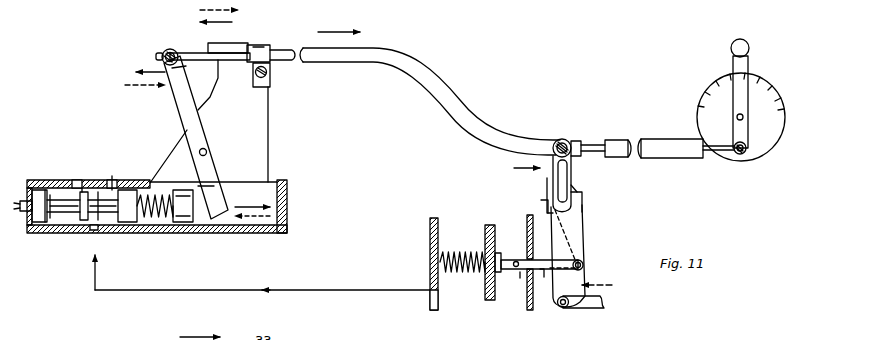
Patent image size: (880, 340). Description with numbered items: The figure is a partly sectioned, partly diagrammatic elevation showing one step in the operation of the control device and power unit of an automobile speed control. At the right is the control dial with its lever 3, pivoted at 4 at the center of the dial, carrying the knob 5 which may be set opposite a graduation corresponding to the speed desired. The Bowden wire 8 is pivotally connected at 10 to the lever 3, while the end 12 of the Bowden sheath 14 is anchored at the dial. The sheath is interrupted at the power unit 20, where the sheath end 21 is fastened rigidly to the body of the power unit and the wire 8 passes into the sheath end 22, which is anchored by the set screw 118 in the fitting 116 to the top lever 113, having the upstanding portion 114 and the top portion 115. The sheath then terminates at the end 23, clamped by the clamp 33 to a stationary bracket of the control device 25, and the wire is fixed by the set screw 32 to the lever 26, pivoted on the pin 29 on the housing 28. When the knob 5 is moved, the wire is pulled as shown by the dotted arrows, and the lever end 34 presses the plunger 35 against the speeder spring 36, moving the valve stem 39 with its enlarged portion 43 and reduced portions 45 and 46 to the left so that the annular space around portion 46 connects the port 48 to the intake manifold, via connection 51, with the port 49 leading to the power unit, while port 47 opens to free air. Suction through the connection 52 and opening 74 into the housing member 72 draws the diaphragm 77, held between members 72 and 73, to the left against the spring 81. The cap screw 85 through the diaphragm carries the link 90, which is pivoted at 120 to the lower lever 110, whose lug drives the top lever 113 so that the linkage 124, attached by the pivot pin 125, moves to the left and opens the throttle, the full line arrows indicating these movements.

The lever 3 is at (748, 80).
The pivot 4 is at (744, 116).
The knob 5 is at (730, 50).
The Bowden wire 8 is at (211, 85).
The pivotal connection 10 is at (742, 158).
The sheath end 12 is at (708, 156).
The Bowden sheath 14 is at (680, 158).
The power unit 20 is at (485, 275).
The sheath end 21 is at (614, 140).
The sheath end 22 is at (588, 138).
The sheath end 23 is at (231, 53).
The control device 25 is at (230, 236).
The lever 26 is at (182, 105).
The control device housing 28 is at (288, 190).
The pin 29 is at (207, 151).
The set screw 32 is at (172, 49).
The clamp 33 is at (258, 45).
The lever end 34 is at (207, 198).
The plunger 35 is at (184, 224).
The speeder spring 36 is at (147, 224).
The valve stem 39 is at (22, 198).
The enlarged portion 43 is at (84, 182).
The reduced diameter portion 45 is at (46, 232).
The reduced diameter portion 46 is at (110, 232).
The port 47 is at (76, 180).
The port 48 is at (117, 182).
The port 49 is at (56, 232).
The connection 51 is at (114, 178).
The connection 52 is at (88, 287).
The housing member 72 is at (430, 240).
The housing member 73 is at (529, 310).
The opening 74 is at (432, 296).
The diaphragm 77 is at (490, 300).
The spring 81 is at (470, 274).
The cap screw 85 is at (503, 258).
The diaphragm link 90 is at (543, 279).
The lower lever 110 is at (584, 240).
The top lever 113 is at (546, 215).
The upstanding portion 114 is at (546, 192).
The top portion 115 is at (573, 173).
The fitting 116 is at (576, 140).
The set screw 118 is at (558, 140).
The pivotal connection 120 is at (585, 262).
The linkage 124 is at (596, 310).
The pivot pin 125 is at (563, 308).